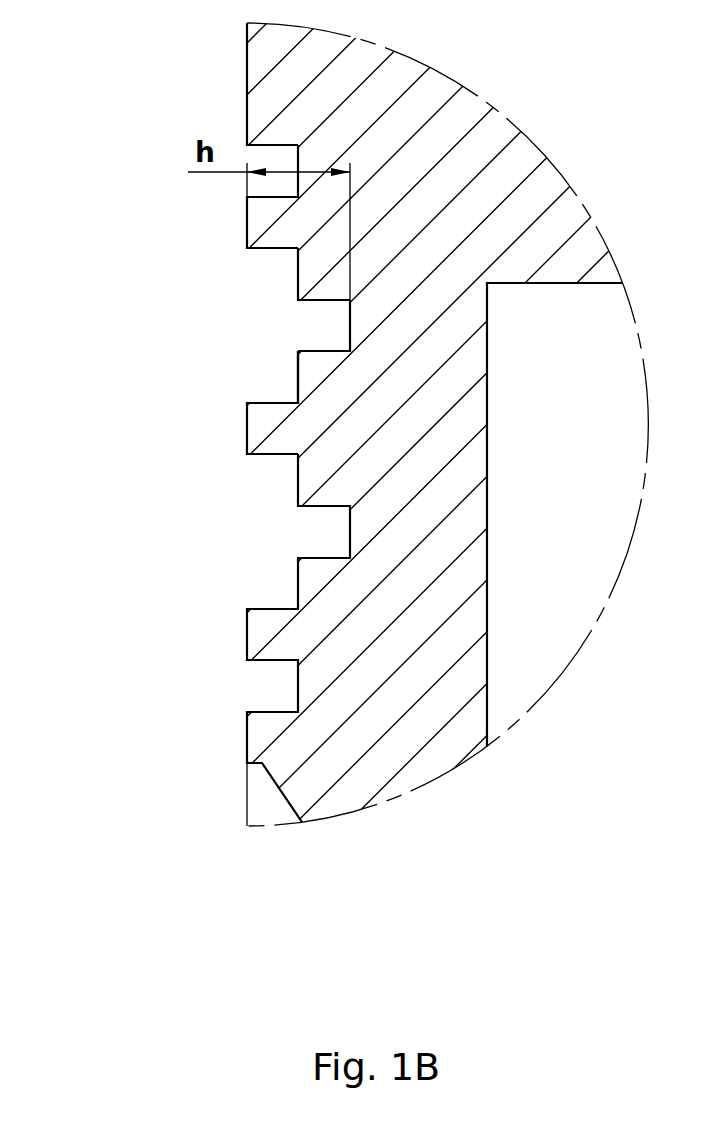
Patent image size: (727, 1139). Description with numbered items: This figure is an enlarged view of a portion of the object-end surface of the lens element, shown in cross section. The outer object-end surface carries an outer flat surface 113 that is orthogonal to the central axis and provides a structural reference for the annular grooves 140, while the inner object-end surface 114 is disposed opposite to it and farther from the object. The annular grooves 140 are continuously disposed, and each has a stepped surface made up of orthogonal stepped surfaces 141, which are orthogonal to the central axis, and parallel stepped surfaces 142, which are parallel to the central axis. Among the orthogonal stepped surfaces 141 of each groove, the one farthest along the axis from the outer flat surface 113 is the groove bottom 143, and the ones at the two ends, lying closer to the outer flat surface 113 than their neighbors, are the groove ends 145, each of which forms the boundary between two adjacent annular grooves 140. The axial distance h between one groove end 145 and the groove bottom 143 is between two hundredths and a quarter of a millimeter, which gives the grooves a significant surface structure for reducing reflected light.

The outer flat surface 113 is at (247, 85).
The inner object-end surface 114 is at (487, 366).
The annular grooves 140 is at (117, 213).
The orthogonal stepped surfaces 141 is at (298, 377).
The parallel stepped surfaces 142 is at (272, 252).
The groove bottom 143 is at (350, 326).
The groove end 145 is at (247, 225).